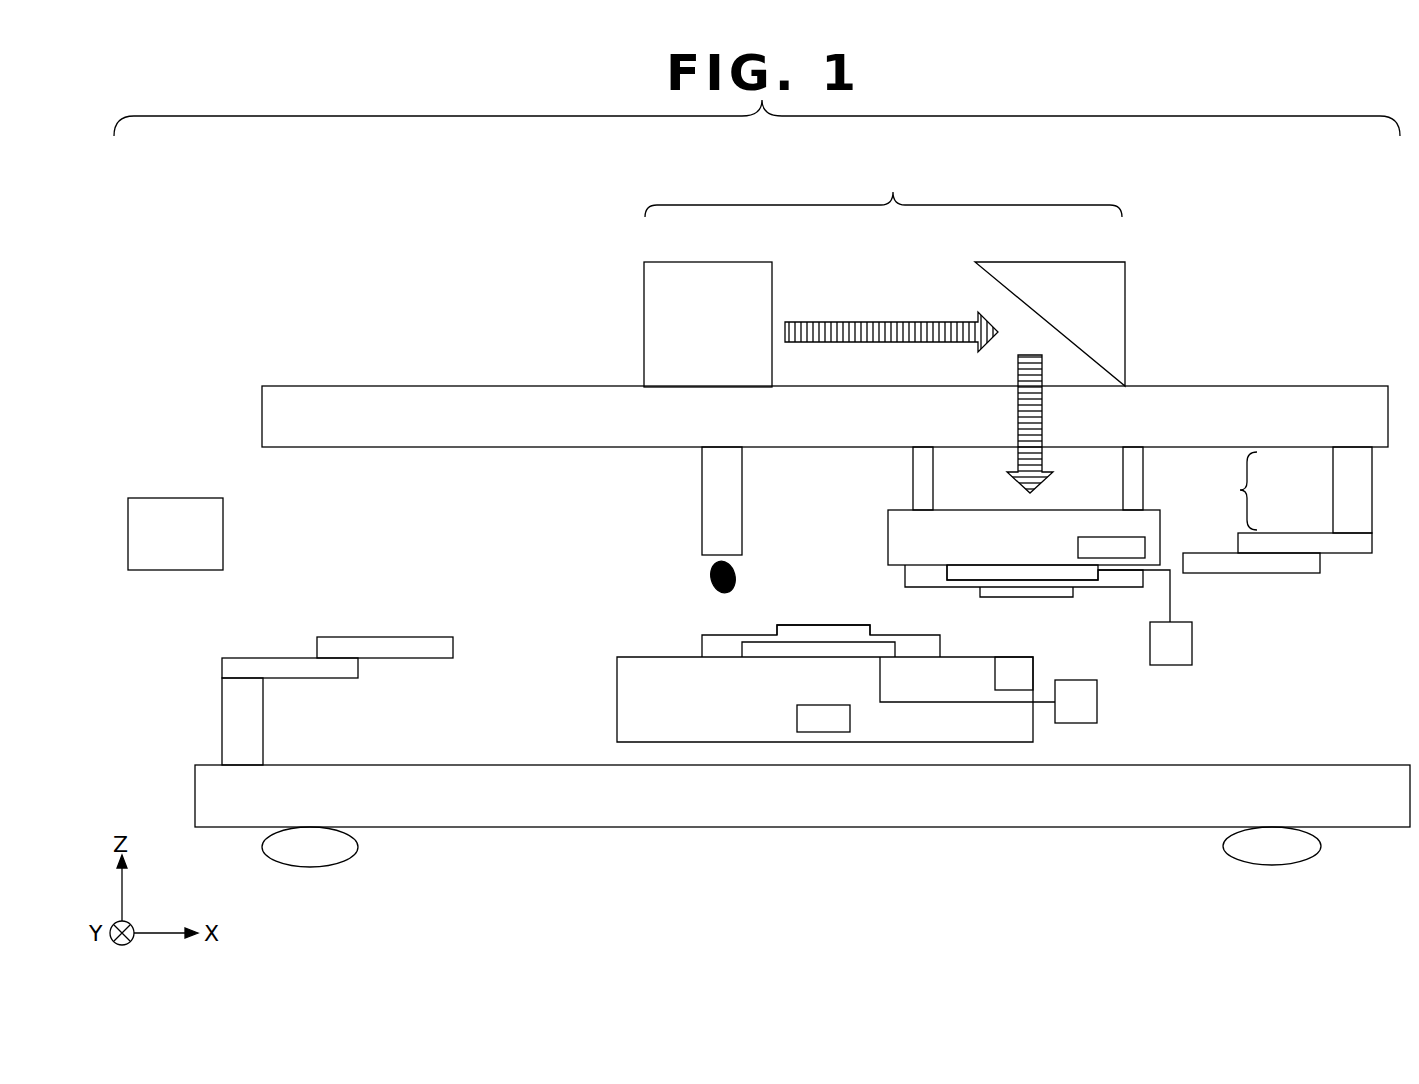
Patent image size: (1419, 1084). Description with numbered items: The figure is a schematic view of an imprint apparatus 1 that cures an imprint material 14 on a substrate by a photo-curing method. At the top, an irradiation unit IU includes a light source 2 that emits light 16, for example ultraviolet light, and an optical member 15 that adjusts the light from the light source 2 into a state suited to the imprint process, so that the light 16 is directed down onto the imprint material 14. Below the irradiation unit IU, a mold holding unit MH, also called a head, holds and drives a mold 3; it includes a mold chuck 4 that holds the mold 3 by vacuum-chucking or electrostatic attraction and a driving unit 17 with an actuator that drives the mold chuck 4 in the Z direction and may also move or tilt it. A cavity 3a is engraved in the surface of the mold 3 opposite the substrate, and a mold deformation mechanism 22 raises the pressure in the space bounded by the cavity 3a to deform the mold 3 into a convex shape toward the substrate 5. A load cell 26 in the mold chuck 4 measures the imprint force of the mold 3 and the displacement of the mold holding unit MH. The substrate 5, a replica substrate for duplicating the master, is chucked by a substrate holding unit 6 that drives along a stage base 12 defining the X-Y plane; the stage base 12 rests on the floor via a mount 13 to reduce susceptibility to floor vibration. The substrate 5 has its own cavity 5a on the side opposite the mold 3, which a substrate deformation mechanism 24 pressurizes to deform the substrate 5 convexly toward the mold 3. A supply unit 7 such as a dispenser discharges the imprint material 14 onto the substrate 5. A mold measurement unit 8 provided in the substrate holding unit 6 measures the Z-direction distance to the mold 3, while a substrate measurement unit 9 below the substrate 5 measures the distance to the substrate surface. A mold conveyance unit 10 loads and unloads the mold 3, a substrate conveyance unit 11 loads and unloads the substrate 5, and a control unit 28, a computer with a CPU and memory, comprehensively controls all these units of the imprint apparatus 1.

The imprint apparatus 1 is at (408, 310).
The light source 2 is at (644, 322).
The mold 3 is at (1094, 590).
The cavity 3a is at (942, 572).
The mold chuck 4 is at (1143, 518).
The substrate 5 is at (702, 640).
The cavity 5a is at (787, 635).
The substrate holding unit 6 is at (617, 677).
The supply unit 7 is at (702, 500).
The mold measurement unit 8 is at (1015, 657).
The substrate measurement unit 9 is at (797, 718).
The mold conveyance unit 10 is at (1310, 575).
The substrate conveyance unit 11 is at (376, 637).
The stage base 12 is at (1355, 765).
The mount 13 is at (1270, 865).
The imprint material 14 is at (710, 575).
The optical member 15 is at (1127, 322).
The light 16 is at (1030, 354).
The driving unit 17 is at (1143, 466).
The mold deformation mechanism 22 is at (1193, 652).
The substrate deformation mechanism 24 is at (1098, 705).
The load cell 26 is at (1090, 537).
The control unit 28 is at (170, 498).
The irradiation unit IU is at (883, 189).
The mold holding unit MH is at (1269, 491).